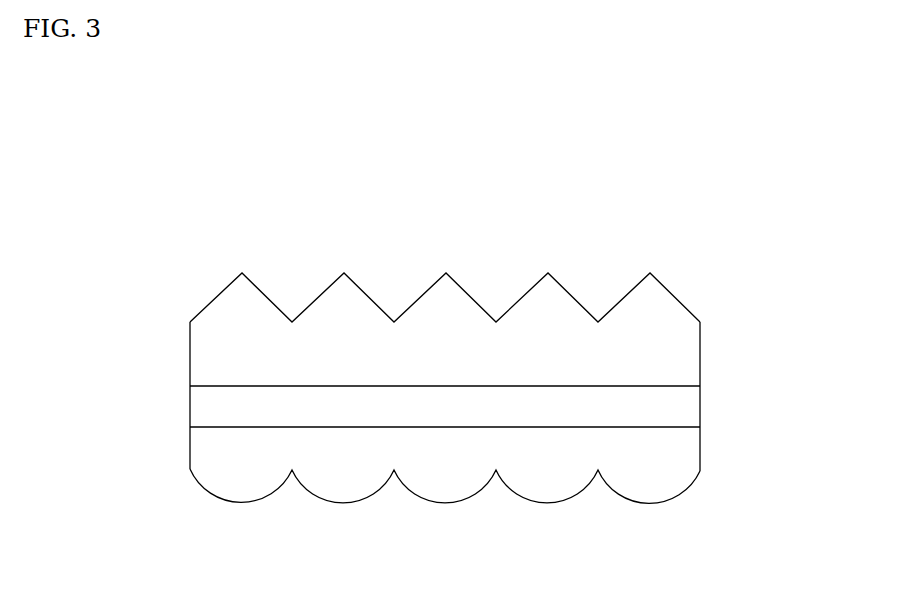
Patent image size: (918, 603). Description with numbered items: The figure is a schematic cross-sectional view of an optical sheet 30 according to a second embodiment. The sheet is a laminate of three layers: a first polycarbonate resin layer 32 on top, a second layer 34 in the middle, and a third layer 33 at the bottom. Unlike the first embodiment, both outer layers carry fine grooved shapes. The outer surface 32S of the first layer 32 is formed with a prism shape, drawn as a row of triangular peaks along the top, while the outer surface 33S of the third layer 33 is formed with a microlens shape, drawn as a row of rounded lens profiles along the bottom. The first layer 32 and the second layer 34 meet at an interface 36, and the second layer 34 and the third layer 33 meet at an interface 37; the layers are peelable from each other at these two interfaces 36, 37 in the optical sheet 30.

The optical sheet 30 is at (454, 368).
The first polycarbonate resin layer 32 is at (494, 282).
The outer surface of the first layer 32S is at (475, 293).
The third layer 33 is at (494, 504).
The outer surface of the third layer 33S is at (453, 503).
The second layer 34 is at (688, 408).
The interface 36 is at (190, 386).
The interface 37 is at (190, 427).